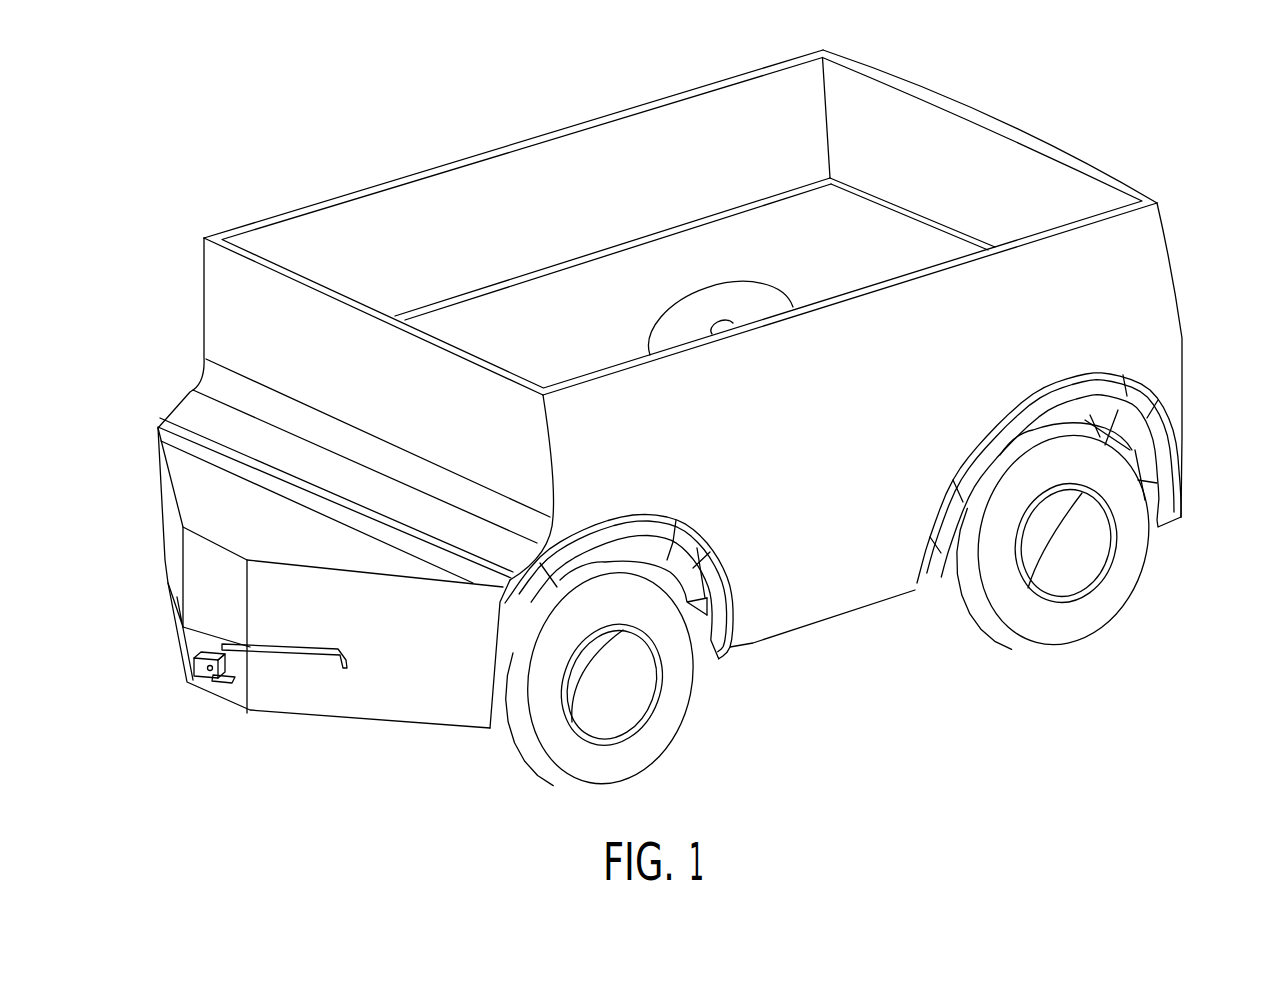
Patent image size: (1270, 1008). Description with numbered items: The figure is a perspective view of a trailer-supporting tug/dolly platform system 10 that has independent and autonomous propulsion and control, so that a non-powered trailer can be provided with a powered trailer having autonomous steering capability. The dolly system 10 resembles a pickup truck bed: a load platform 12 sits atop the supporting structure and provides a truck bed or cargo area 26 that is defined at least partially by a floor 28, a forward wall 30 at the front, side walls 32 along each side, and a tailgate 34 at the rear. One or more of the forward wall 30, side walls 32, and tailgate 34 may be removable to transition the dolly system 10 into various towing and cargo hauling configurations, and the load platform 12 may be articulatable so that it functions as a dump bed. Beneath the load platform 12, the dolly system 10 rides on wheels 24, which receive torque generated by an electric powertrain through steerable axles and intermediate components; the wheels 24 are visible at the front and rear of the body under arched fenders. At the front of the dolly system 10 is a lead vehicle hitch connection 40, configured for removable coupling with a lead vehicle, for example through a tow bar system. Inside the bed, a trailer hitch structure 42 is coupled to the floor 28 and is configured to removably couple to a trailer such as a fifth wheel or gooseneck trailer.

The dolly platform system 10 is at (669, 483).
The load platform 12 is at (680, 246).
The wheels 24 is at (657, 733).
The cargo area 26 is at (469, 187).
The floor 28 is at (622, 293).
The forward wall 30 is at (224, 305).
The side walls 32 is at (346, 187).
The tailgate 34 is at (1054, 145).
The lead vehicle hitch connection 40 is at (207, 693).
The trailer hitch structure 42 is at (770, 287).